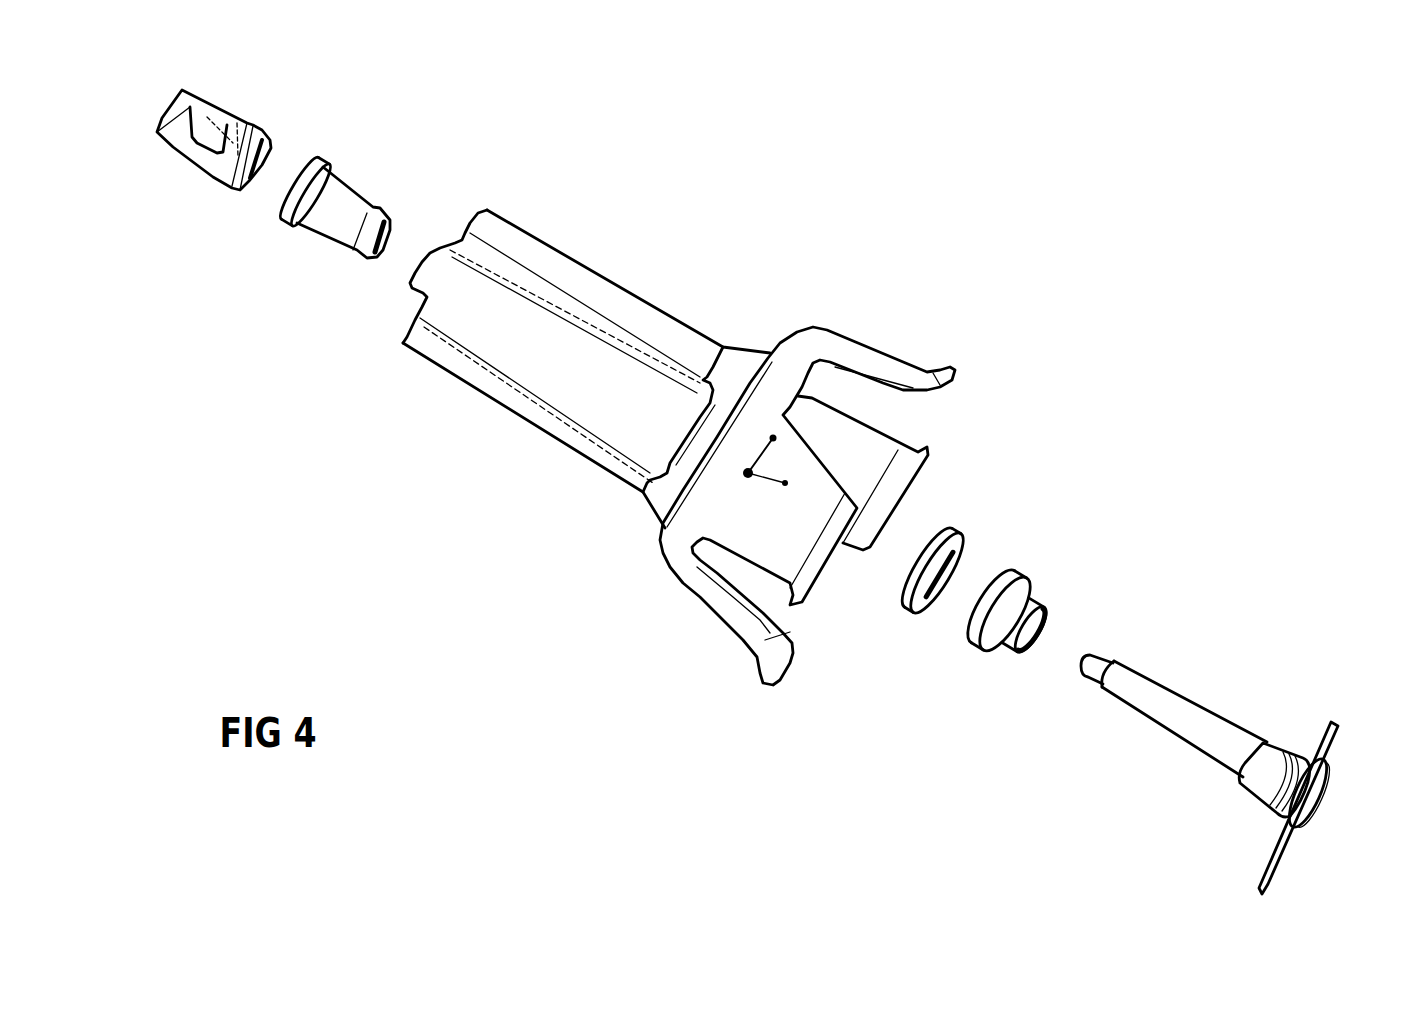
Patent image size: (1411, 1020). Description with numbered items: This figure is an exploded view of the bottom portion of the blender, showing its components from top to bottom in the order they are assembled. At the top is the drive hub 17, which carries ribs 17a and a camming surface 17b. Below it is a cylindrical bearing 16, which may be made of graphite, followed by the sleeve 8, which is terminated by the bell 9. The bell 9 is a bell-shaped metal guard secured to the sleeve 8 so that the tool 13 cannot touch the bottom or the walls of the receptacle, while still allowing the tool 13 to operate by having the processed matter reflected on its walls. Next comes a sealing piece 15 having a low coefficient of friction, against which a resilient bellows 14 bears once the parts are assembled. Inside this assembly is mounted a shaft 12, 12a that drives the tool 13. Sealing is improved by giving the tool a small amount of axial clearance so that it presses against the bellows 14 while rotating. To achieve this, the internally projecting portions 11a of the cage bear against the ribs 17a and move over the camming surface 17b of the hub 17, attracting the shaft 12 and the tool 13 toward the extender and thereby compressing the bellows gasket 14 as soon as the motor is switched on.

The sleeve 8 is at (502, 230).
The bell-shaped metal guard 9 is at (850, 347).
The internally projecting portions 11a is at (240, 110).
The shaft 12 is at (1180, 713).
The shaft 12a is at (1100, 658).
The tool 13 is at (1330, 763).
The resilient bellows 14 is at (1040, 590).
The sealing piece 15 is at (955, 530).
The cylindrical bearing 16 is at (337, 223).
The drive hub 17 is at (257, 125).
The ribs 17a is at (220, 110).
The camming surface 17b is at (177, 137).